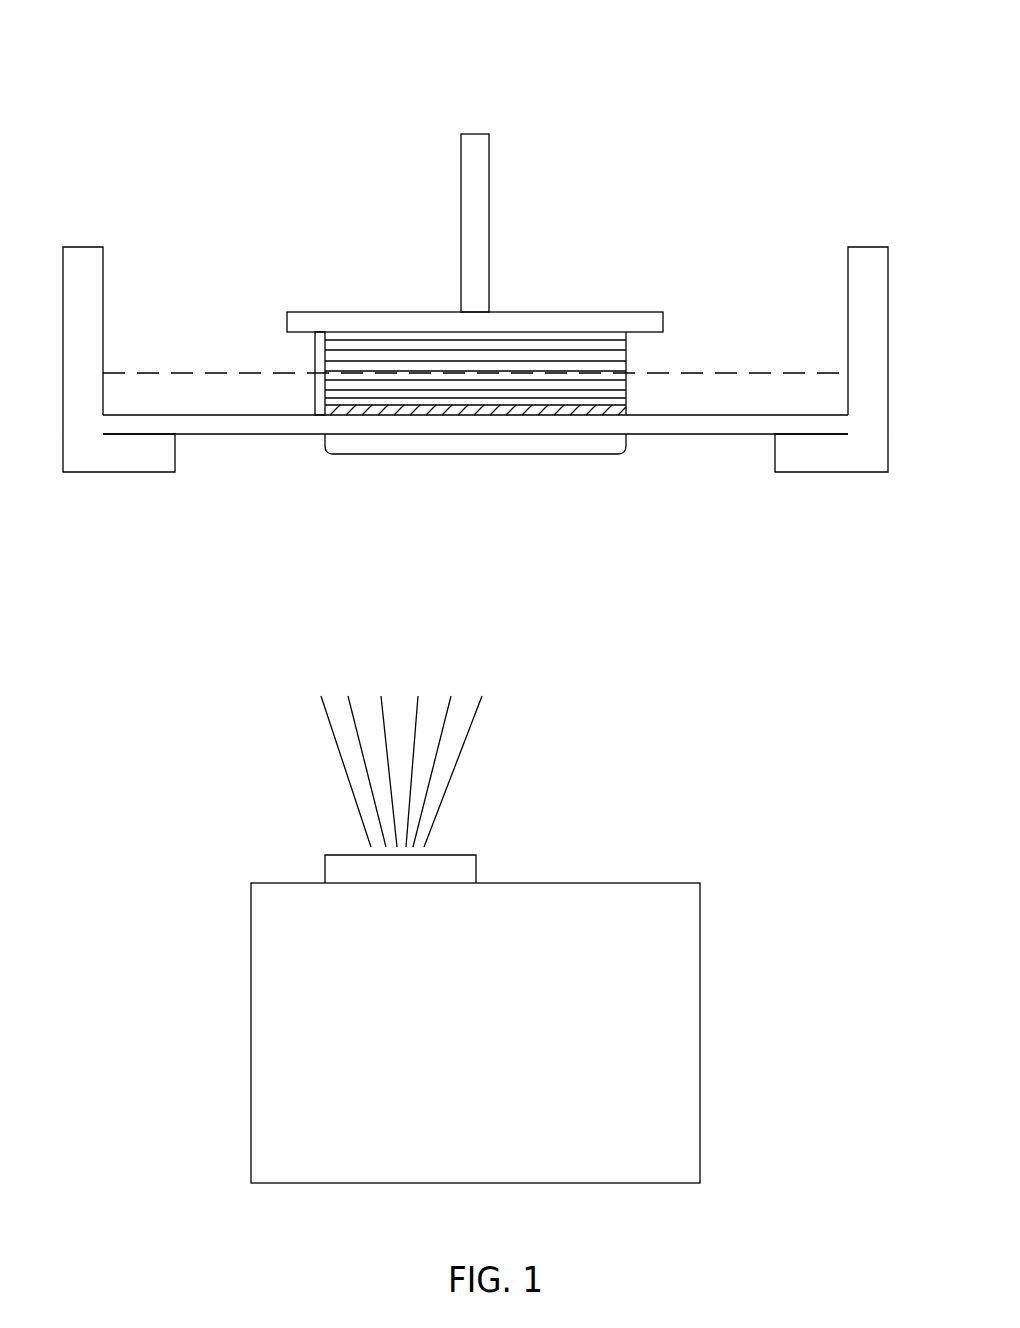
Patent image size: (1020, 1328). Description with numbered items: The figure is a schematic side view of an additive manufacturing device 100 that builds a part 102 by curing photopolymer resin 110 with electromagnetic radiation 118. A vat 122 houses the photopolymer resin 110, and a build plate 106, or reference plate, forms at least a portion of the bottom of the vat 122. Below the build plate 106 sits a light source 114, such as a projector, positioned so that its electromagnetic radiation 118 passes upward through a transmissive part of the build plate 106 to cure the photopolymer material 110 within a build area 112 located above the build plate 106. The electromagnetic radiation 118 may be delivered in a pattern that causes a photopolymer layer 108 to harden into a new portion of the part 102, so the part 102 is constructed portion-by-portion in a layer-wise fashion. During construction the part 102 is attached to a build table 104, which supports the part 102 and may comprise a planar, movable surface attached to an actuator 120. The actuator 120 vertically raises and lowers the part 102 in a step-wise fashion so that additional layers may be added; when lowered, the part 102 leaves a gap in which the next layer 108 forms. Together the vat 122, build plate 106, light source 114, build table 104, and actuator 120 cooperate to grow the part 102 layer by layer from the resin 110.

The additive manufacturing device 100 is at (172, 52).
The part 102 is at (315, 350).
The build table 104 is at (568, 312).
The build plate 106 is at (697, 435).
The photopolymer layer 108 is at (627, 412).
The photopolymer resin 110 is at (205, 387).
The build area 112 is at (473, 455).
The light source 114 is at (700, 987).
The electromagnetic radiation 118 is at (462, 743).
The actuator 120 is at (475, 134).
The vat 122 is at (868, 244).